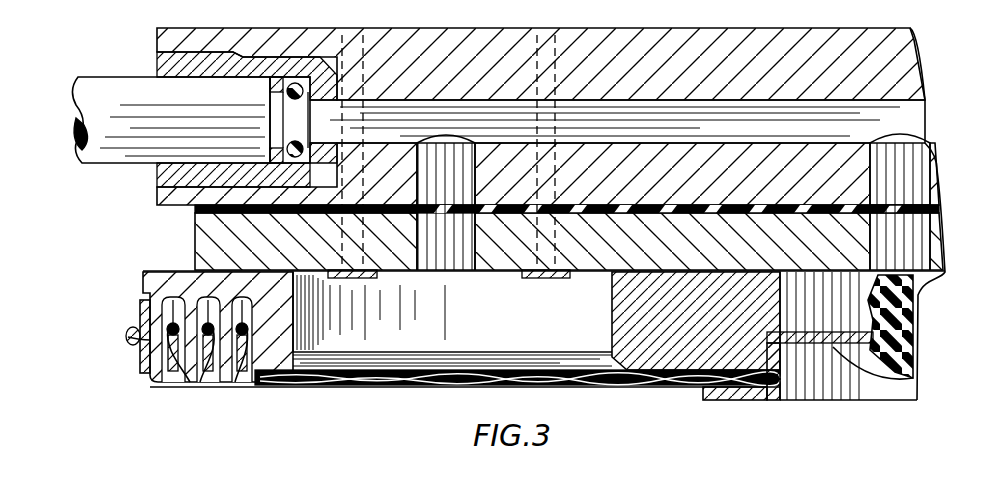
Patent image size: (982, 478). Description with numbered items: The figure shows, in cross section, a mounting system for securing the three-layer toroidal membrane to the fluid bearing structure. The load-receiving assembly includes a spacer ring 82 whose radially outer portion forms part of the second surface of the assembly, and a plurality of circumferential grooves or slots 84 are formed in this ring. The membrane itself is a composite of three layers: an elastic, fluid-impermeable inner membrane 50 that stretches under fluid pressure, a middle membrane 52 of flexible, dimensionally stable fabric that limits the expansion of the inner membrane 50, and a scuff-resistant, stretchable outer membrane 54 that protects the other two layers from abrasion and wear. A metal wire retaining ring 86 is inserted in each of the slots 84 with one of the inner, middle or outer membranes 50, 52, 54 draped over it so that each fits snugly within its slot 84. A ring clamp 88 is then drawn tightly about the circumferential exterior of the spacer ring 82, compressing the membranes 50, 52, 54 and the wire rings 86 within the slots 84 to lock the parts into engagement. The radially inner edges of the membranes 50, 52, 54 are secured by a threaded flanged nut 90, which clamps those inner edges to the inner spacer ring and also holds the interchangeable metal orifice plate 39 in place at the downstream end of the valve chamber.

The orifice plate 39 is at (830, 350).
The inner membrane 50 is at (257, 381).
The middle membrane 52 is at (221, 383).
The outer membrane 54 is at (408, 388).
The spacer ring 82 is at (183, 271).
The slots 84 is at (195, 381).
The wire retaining ring 86 is at (240, 330).
The ring clamp 88 is at (140, 335).
The threaded flanged nut 90 is at (768, 402).